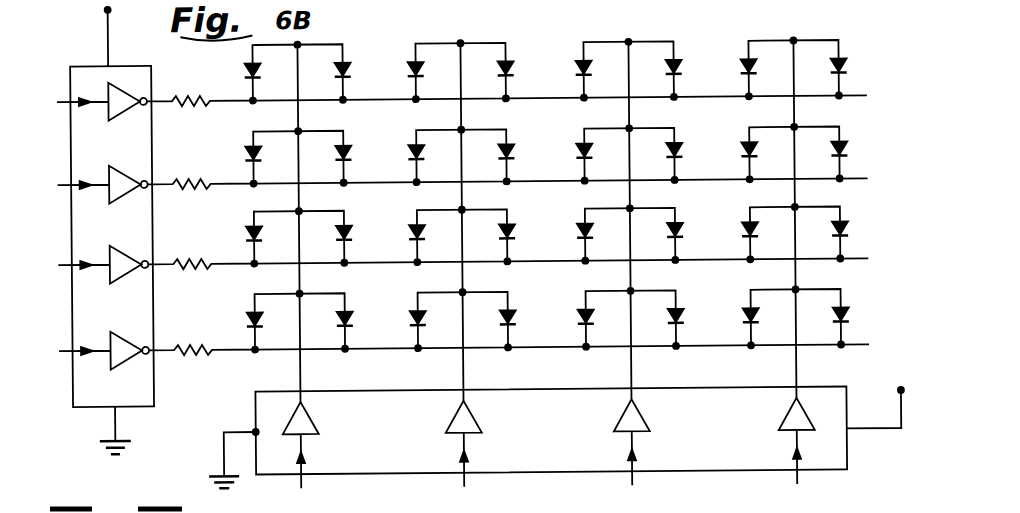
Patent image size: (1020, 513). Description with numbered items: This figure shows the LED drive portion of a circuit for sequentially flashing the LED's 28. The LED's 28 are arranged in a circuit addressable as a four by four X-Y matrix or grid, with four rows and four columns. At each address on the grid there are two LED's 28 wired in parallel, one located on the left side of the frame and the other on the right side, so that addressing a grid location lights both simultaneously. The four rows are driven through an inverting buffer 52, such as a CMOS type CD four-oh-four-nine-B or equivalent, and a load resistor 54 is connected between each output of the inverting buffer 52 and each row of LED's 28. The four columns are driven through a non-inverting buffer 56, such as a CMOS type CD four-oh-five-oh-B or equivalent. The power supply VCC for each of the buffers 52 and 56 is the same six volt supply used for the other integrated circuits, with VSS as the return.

The LED's 28 is at (416, 61).
The inverting buffer 52 is at (86, 402).
The load resistor 54 is at (185, 103).
The non-inverting buffer 56 is at (697, 472).